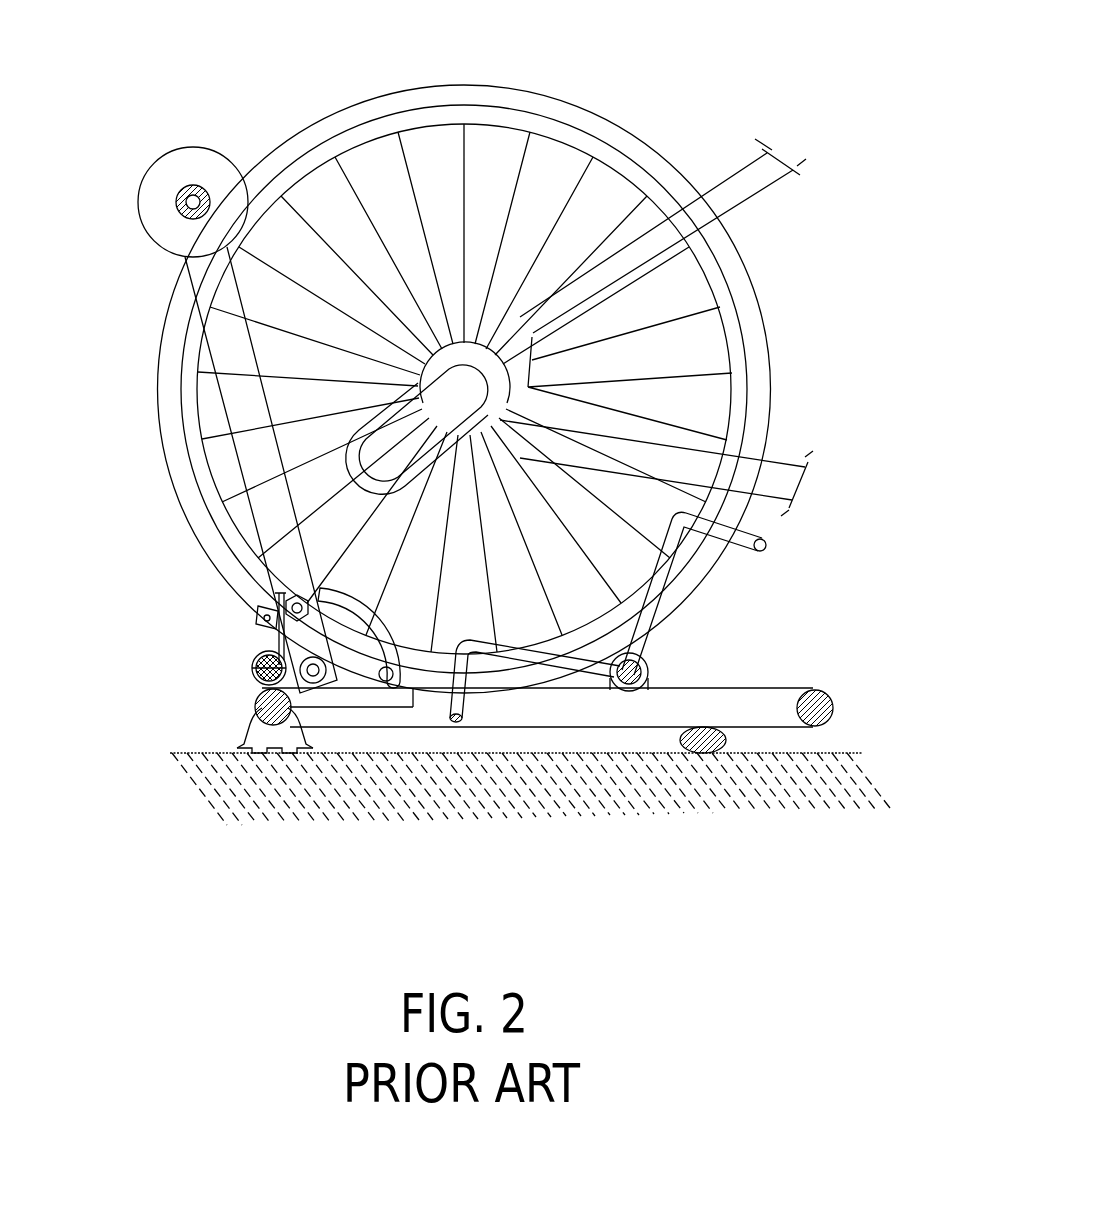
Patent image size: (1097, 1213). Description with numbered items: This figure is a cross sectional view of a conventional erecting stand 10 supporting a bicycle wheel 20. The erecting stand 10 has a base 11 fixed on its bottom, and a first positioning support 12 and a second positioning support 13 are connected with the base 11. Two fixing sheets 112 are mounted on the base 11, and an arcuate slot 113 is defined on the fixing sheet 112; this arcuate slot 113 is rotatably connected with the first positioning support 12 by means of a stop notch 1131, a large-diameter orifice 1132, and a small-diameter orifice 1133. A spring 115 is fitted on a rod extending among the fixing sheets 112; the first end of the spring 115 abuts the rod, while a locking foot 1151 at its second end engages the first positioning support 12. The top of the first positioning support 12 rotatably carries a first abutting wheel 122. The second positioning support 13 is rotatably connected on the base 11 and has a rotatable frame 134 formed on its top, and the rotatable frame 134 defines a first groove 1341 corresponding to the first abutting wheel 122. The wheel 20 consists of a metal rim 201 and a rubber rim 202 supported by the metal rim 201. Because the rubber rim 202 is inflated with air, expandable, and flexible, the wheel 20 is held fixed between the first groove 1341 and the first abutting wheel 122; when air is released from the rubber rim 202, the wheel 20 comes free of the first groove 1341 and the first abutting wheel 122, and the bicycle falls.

The erecting stand 10 is at (818, 665).
The base 11 is at (822, 710).
The first positioning support 12 is at (238, 469).
The second positioning support 13 is at (650, 670).
The wheel 20 is at (785, 143).
The fixing sheets 112 is at (262, 630).
The arcuate slot 113 is at (258, 614).
The spring 115 is at (250, 667).
The first abutting wheel 122 is at (187, 167).
The rotatable frame 134 is at (667, 582).
The metal rim 201 is at (567, 106).
The rubber rim 202 is at (505, 86).
The stop notch 1131 is at (388, 700).
The large-diameter orifice 1132 is at (292, 600).
The small-diameter orifice 1133 is at (362, 628).
The locking foot 1151 is at (263, 598).
The first groove 1341 is at (766, 538).